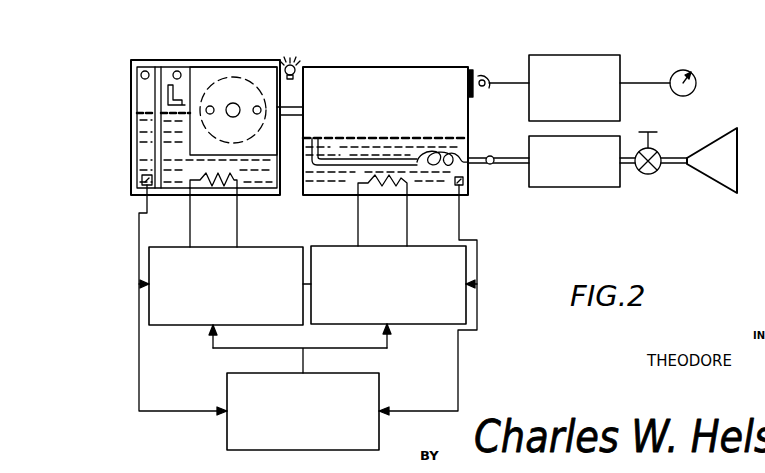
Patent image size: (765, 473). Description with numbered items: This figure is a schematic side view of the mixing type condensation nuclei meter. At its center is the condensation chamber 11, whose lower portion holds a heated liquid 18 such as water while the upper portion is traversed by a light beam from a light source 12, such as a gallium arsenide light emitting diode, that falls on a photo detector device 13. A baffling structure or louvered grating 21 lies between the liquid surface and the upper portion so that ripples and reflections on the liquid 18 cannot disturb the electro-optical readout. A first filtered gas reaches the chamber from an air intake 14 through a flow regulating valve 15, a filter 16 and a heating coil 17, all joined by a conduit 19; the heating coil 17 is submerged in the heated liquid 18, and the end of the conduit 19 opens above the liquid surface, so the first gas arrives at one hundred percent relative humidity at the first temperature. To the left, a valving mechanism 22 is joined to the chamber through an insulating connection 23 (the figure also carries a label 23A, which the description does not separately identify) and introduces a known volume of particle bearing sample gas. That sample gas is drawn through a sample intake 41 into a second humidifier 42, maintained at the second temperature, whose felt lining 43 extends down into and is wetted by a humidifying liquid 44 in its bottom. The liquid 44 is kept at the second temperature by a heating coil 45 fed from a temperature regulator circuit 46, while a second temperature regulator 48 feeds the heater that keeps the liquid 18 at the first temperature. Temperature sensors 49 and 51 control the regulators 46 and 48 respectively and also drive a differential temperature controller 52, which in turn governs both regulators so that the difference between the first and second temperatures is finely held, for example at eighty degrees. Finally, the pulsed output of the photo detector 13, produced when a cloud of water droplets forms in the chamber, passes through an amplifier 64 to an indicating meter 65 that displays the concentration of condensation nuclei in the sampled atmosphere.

The condensation chamber 11 is at (380, 67).
The light source 12 is at (295, 62).
The photo detector device 13 is at (482, 76).
The air intake 14 is at (718, 143).
The flow regulating valve 15 is at (660, 151).
The filter 16 is at (600, 177).
The heating coil 17 is at (470, 152).
The heated liquid 18 is at (331, 180).
The conduit 19 is at (315, 138).
The baffling structure or grating 21 is at (352, 140).
The valving mechanism 22 is at (112, 137).
The insulating connection 23 is at (212, 78).
The conduit 23A is at (296, 107).
The sample inlet 41 is at (383, 187).
The second humidifier 42 is at (137, 116).
The felt lining 43 is at (158, 93).
The humidifying liquid 44 is at (148, 160).
The heating coil 45 is at (211, 188).
The temperature regulator circuit 46 is at (255, 247).
The temperature regulator 48 is at (466, 275).
The temperature sensor 49 is at (128, 193).
The temperature sensor 51 is at (457, 188).
The temperature controller 52 is at (227, 438).
The amplifier 64 is at (556, 55).
The indicating meter 65 is at (680, 71).